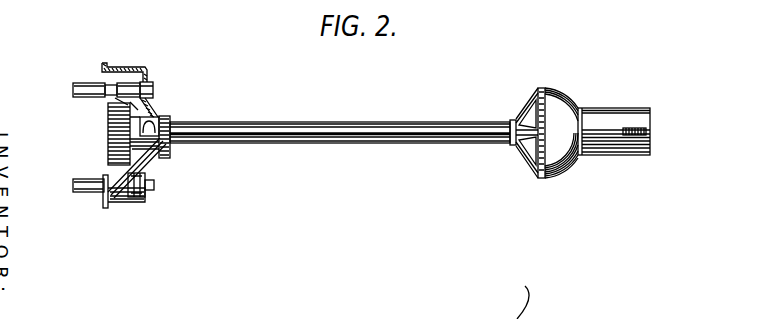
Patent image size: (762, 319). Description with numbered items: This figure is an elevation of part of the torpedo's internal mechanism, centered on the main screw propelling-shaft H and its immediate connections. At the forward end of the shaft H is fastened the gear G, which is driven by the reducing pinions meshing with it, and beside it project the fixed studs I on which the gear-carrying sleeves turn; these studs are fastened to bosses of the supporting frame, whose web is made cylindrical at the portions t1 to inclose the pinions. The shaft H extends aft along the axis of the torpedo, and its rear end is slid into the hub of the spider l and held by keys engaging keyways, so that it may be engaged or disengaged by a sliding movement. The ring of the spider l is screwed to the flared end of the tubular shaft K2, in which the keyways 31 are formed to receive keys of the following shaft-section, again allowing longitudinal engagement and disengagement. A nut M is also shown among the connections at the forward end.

The fixed stud I is at (73, 88).
The gear G is at (108, 135).
The shaft H is at (333, 136).
The spider l is at (525, 105).
The tubular shaft K2 is at (597, 119).
The keyway 31 is at (649, 132).
The cylindrical portion of web t1 is at (127, 186).
The nut M is at (124, 198).